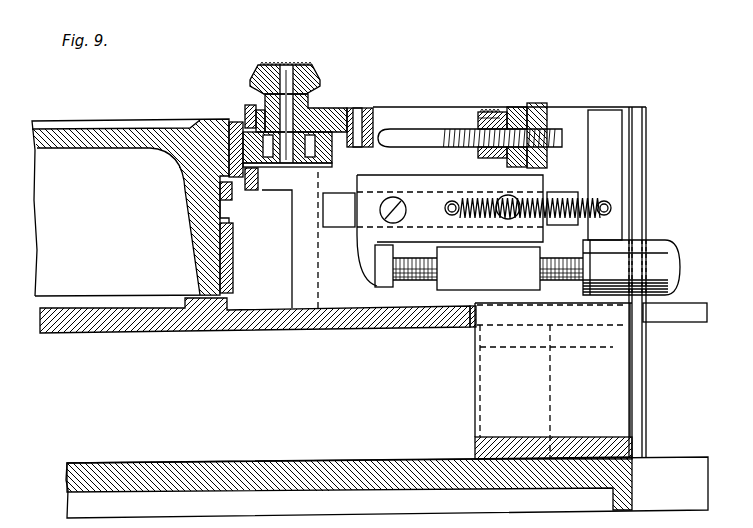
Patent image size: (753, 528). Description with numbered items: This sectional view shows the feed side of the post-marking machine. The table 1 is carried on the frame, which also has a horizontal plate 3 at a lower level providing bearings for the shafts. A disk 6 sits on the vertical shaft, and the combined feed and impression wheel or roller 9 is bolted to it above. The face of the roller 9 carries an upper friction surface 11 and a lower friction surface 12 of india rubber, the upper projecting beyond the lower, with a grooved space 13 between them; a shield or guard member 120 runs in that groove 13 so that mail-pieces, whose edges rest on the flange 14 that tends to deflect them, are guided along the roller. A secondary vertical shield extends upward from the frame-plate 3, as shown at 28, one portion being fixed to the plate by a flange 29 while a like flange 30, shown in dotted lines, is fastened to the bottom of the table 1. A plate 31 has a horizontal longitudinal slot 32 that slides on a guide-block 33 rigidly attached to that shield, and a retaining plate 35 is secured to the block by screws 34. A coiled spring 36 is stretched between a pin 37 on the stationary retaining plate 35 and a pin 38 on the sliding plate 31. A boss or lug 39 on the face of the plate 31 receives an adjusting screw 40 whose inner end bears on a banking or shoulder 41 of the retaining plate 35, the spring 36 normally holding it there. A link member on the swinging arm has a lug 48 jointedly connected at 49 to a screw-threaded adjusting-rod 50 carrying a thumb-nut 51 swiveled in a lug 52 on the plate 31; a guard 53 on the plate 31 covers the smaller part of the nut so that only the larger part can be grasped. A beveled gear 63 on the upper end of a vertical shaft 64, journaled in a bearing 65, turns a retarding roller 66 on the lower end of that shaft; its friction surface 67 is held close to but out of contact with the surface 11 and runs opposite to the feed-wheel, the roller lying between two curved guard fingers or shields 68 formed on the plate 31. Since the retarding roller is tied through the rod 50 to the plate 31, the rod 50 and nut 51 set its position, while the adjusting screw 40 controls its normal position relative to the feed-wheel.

The table 1 is at (695, 306).
The horizontal plate 3 is at (376, 462).
The disk 6 is at (95, 333).
The combined feed and impression wheel 9 is at (50, 120).
The upper friction surface 11 is at (228, 120).
The lower friction surface 12 is at (234, 272).
The grooved space 13 is at (218, 192).
The flange 14 is at (370, 328).
The upwardly extended portion of secondary shield 28 is at (475, 383).
The flange 29 is at (478, 440).
The flange 30 is at (613, 348).
The plate 31 is at (451, 116).
The horizontal longitudinal slot 32 is at (303, 240).
The guide-block 33 is at (353, 216).
The screws 34 is at (399, 196).
The retaining plate 35 is at (406, 202).
The coiled spring 36 is at (476, 204).
The pin 37 is at (453, 201).
The pin 38 is at (612, 204).
The boss or lug 39 is at (488, 268).
The adjusting screw 40 is at (658, 247).
The banking or shoulder 41 is at (389, 268).
The lug 48 is at (330, 110).
The jointed connection 49 is at (356, 110).
The screw-threaded adjusting-rod 50 is at (414, 130).
The thumb-nut 51 is at (540, 110).
The lug 52 is at (519, 106).
The guard 53 is at (491, 113).
The beveled gear 63 is at (310, 82).
The vertical shaft 64 is at (289, 65).
The bearing 65 is at (261, 110).
The retarding roller 66 is at (305, 167).
The friction surface 67 is at (334, 154).
The curved guard fingers 68 is at (250, 106).
The shield or guard member 120 is at (226, 204).